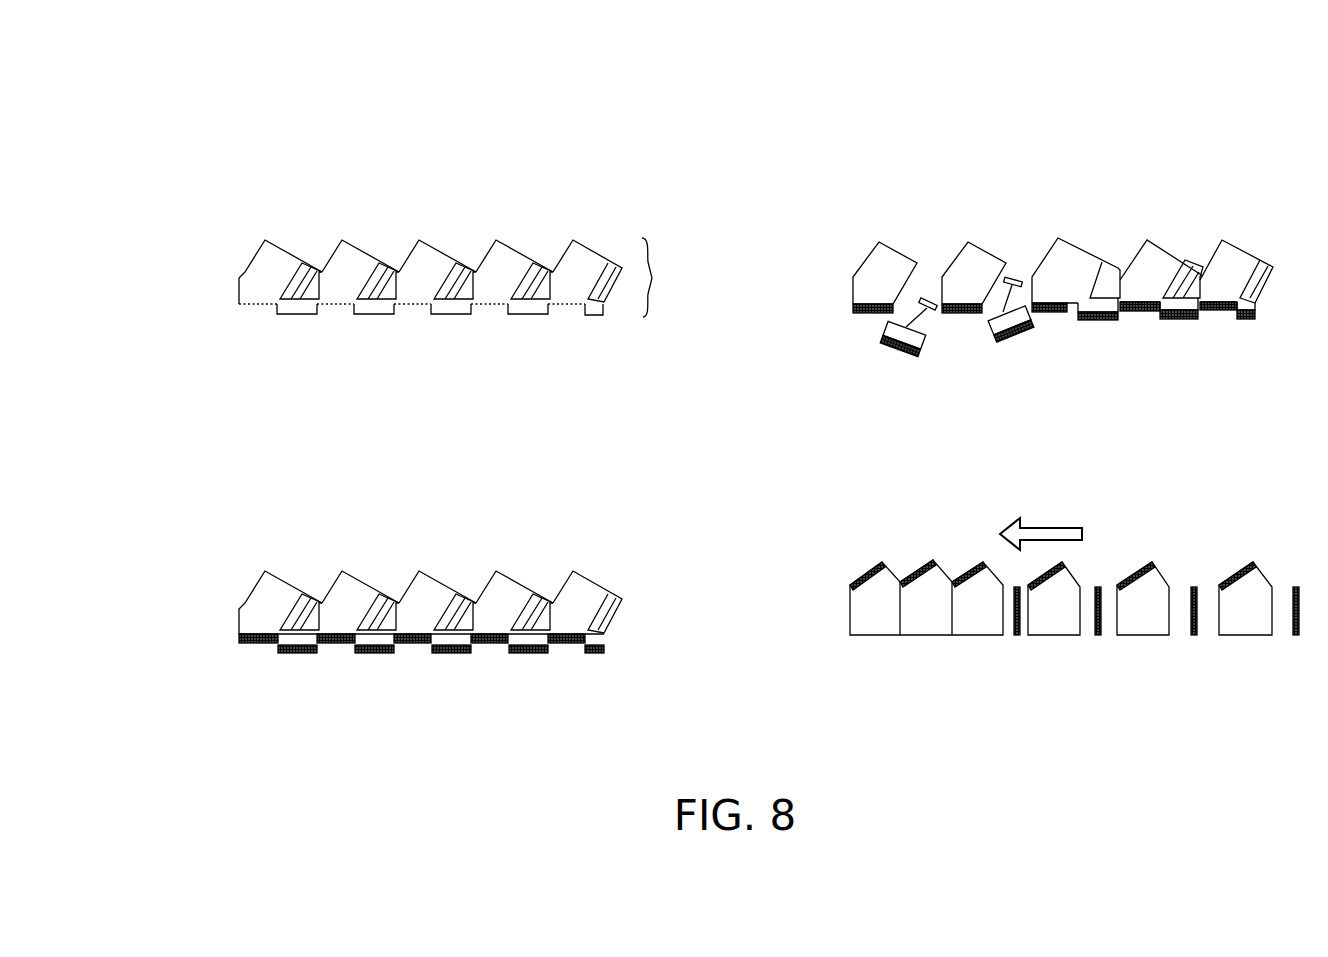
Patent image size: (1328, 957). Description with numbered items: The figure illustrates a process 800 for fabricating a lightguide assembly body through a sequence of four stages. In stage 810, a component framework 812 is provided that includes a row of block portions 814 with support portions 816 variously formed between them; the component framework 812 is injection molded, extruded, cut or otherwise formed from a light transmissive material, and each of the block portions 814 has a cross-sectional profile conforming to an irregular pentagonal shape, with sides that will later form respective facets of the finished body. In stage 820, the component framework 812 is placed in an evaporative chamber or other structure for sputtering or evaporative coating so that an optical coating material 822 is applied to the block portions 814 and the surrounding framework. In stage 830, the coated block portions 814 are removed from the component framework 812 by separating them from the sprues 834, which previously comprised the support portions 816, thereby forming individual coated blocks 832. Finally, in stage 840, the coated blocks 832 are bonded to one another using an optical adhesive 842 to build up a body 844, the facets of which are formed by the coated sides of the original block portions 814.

The process 800 is at (285, 112).
The stage 810 is at (181, 301).
The component framework 812 is at (657, 291).
The block portions 814 is at (610, 228).
The support portions 816 is at (548, 325).
The stage 820 is at (181, 634).
The optical coating material 822 is at (263, 652).
The stage 830 is at (793, 301).
The coated blocks 832 is at (897, 244).
The sprues 834 is at (930, 350).
The stage 840 is at (793, 634).
The optical adhesive 842 is at (1023, 643).
The body 844 is at (926, 641).